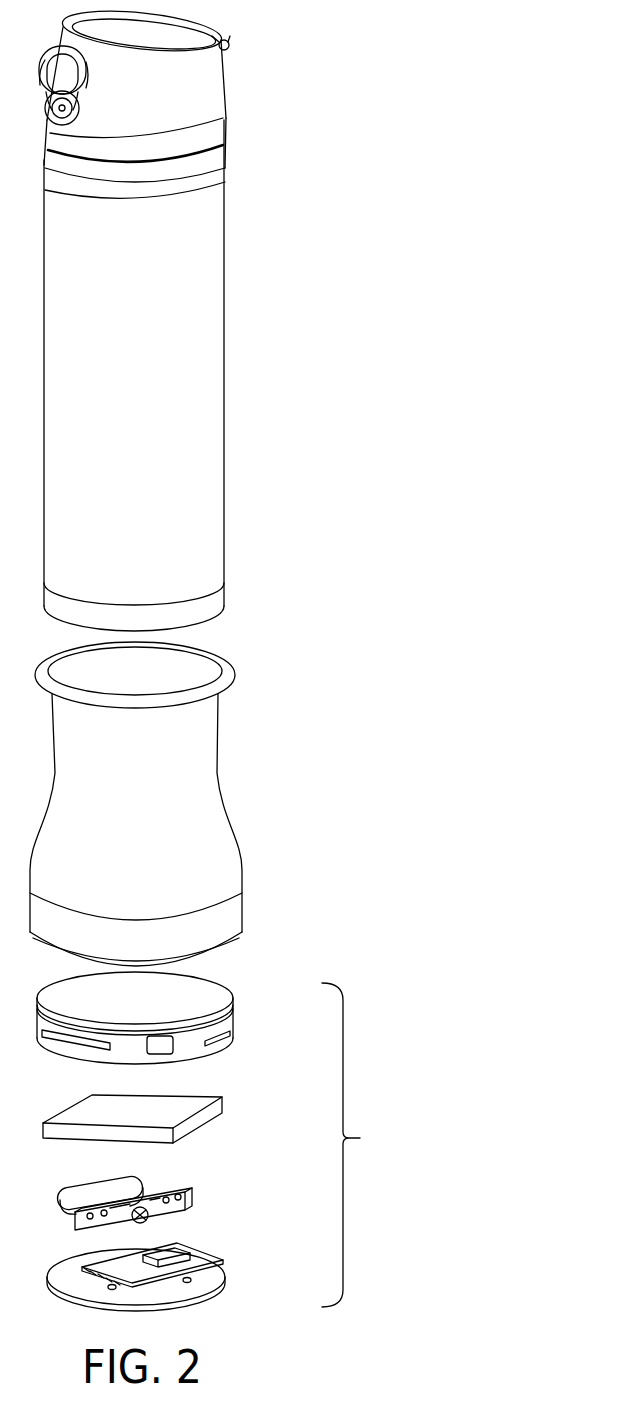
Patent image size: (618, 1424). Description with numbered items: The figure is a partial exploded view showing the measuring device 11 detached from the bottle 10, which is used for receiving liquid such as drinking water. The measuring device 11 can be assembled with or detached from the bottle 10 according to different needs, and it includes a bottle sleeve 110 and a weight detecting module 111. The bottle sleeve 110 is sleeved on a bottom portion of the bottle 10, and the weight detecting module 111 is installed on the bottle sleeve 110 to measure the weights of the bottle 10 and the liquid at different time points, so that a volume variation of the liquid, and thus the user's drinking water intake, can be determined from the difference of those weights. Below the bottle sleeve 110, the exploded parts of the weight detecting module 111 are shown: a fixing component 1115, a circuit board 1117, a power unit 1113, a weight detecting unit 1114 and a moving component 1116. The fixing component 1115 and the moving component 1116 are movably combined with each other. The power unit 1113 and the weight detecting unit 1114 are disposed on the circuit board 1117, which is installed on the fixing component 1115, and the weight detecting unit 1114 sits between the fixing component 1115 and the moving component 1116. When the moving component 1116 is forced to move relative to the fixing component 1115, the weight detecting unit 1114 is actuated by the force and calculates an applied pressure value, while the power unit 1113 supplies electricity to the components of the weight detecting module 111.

The bottle 10 is at (196, 356).
The measuring device 11 is at (416, 720).
The bottle sleeve 110 is at (210, 788).
The weight detecting module 111 is at (218, 1141).
The power unit 1113 is at (133, 1180).
The weight detecting unit 1114 is at (190, 1201).
The fixing component 1115 is at (238, 1010).
The moving component 1116 is at (220, 1275).
The circuit board 1117 is at (225, 1108).